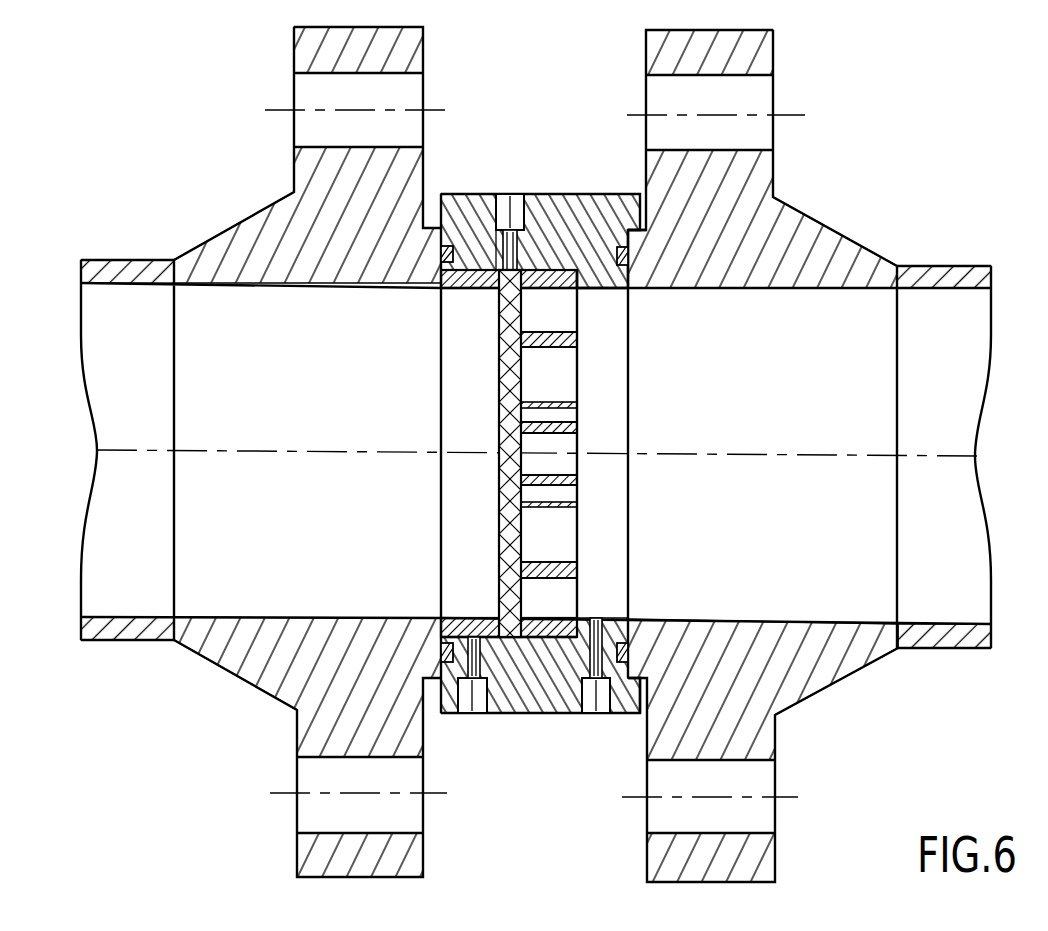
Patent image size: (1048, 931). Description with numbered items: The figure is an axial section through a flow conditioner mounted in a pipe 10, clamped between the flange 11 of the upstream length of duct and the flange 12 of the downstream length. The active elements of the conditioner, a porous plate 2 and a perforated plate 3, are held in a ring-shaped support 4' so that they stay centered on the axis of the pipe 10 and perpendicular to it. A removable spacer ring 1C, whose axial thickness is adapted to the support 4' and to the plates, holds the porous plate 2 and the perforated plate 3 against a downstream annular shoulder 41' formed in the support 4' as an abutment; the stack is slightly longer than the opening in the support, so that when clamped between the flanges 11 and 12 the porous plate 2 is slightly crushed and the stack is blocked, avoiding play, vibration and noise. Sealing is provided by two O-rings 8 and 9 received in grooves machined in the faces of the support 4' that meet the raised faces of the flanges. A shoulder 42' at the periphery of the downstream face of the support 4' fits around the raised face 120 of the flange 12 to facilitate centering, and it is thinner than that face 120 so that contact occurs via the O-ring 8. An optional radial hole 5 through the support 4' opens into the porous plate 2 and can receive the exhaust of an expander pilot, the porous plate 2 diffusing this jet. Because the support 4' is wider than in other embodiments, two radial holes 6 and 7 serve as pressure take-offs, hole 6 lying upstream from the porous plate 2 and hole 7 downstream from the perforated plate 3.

The flange 11 is at (300, 47).
The flange 12 is at (760, 51).
The pipe 10 is at (955, 280).
The porous plate 2 is at (484, 248).
The radial hole 5 is at (507, 215).
The perforated plate 3 is at (552, 275).
The ring-shaped support 4' is at (540, 425).
The downstream annular shoulder 41' is at (602, 298).
The shoulder 42' is at (675, 274).
The O-ring 9 is at (441, 257).
The O-ring 8 is at (633, 668).
The removable spacer ring 1C is at (453, 618).
The radial hole 6 is at (482, 705).
The radial hole 7 is at (590, 707).
The raised face 120 is at (633, 683).